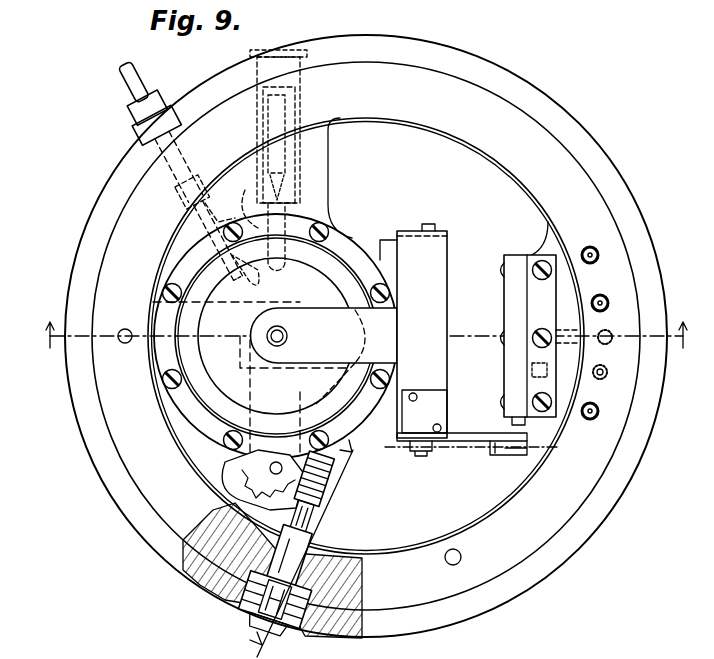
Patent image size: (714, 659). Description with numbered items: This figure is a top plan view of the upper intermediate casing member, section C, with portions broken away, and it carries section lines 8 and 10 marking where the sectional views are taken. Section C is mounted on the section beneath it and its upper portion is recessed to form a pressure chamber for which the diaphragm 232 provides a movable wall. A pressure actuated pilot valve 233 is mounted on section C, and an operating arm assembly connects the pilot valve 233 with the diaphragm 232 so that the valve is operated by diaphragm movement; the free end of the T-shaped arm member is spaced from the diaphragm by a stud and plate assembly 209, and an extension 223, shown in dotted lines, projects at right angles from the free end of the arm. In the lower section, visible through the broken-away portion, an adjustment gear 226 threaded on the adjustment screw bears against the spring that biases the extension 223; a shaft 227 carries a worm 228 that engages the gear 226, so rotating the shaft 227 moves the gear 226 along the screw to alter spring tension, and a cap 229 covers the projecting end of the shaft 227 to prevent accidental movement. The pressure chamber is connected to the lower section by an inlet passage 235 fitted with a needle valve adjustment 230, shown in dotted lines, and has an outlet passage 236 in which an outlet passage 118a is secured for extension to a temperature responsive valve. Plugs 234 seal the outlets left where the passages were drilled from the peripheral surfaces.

The section C is at (587, 478).
The section line 8- 8 is at (365, 335).
The section line 10- 10 is at (352, 455).
The outlet passage 118a is at (125, 88).
The stud and plate assembly 209 is at (272, 402).
The extension 223 is at (330, 366).
The adjustment gear 226 is at (263, 487).
The shaft 227 is at (312, 524).
The worm 228 is at (340, 487).
The cap 229 is at (243, 616).
The needle valve adjustment 230 is at (288, 195).
The diaphragm 232 is at (195, 358).
The pilot valve 233 is at (508, 305).
The plugs 234 is at (294, 315).
The inlet passage 235 is at (258, 215).
The outlet passage 236 is at (205, 222).